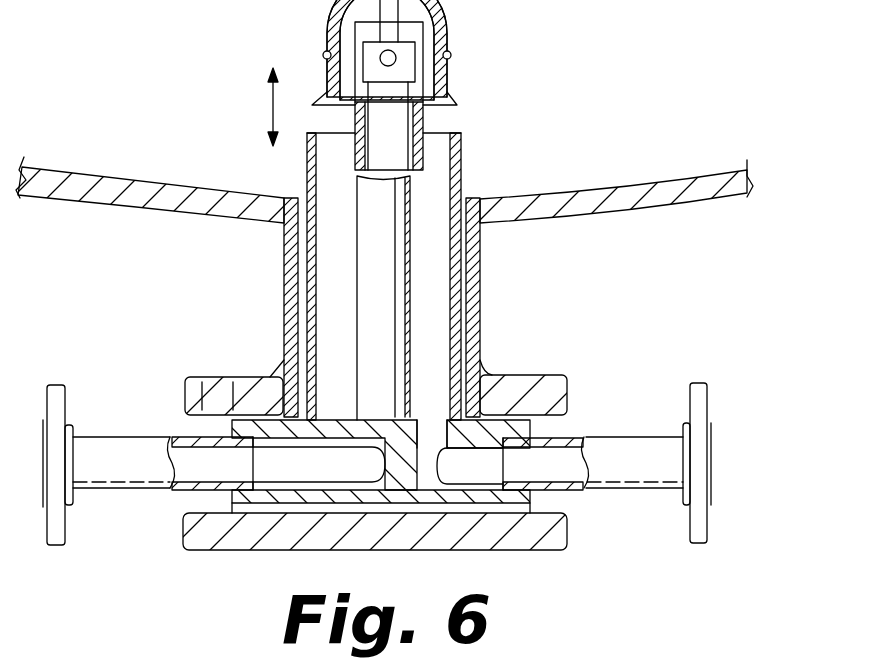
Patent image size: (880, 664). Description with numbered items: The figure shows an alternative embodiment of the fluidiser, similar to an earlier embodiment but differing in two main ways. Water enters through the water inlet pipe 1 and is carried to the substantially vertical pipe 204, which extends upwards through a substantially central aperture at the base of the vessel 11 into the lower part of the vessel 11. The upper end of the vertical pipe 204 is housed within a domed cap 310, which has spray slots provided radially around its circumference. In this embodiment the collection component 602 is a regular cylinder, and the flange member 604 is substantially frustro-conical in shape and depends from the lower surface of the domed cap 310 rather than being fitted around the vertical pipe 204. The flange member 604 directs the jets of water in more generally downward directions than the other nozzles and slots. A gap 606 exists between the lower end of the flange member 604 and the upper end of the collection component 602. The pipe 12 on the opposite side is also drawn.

The water inlet pipe 1 is at (128, 477).
The outlet pipe 12 is at (643, 473).
The vessel 11 is at (708, 192).
The vertical pipe 204 is at (378, 333).
The domed cap 310 is at (445, 14).
The collection component 602 is at (463, 175).
The flange member 604 is at (452, 98).
The gap 606 is at (272, 108).